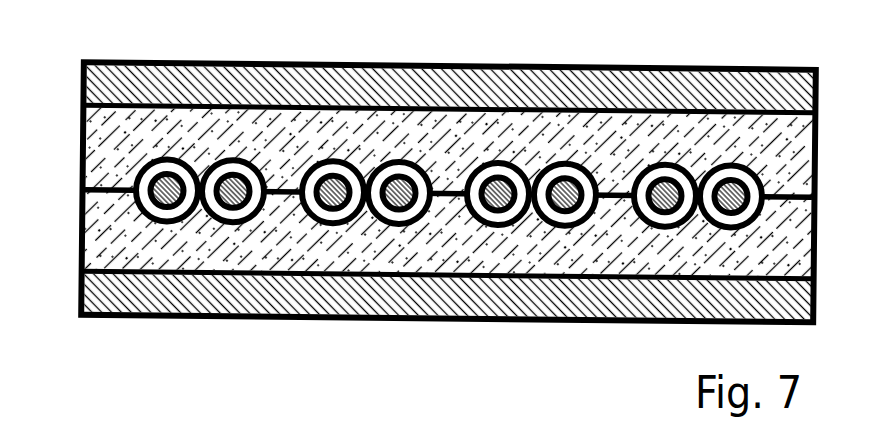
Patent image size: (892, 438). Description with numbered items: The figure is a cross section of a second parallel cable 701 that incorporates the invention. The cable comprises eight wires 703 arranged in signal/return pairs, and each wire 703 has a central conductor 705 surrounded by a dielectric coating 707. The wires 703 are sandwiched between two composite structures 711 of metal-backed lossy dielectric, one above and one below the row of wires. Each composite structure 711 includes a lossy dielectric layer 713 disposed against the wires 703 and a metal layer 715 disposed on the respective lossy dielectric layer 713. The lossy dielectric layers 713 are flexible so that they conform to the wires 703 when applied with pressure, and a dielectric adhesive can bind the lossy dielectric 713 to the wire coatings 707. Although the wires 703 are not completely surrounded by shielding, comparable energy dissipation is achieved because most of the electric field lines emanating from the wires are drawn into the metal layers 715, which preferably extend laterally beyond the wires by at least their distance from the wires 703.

The second parallel cable 701 is at (449, 179).
The wires 703 is at (398, 158).
The conductor 705 is at (568, 160).
The dielectric coating 707 is at (729, 162).
The composite structures 711 is at (722, 71).
The lossy dielectric layer 713 is at (472, 155).
The metal layer 715 is at (447, 100).